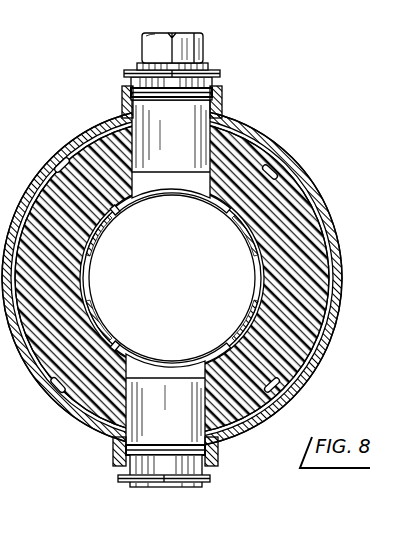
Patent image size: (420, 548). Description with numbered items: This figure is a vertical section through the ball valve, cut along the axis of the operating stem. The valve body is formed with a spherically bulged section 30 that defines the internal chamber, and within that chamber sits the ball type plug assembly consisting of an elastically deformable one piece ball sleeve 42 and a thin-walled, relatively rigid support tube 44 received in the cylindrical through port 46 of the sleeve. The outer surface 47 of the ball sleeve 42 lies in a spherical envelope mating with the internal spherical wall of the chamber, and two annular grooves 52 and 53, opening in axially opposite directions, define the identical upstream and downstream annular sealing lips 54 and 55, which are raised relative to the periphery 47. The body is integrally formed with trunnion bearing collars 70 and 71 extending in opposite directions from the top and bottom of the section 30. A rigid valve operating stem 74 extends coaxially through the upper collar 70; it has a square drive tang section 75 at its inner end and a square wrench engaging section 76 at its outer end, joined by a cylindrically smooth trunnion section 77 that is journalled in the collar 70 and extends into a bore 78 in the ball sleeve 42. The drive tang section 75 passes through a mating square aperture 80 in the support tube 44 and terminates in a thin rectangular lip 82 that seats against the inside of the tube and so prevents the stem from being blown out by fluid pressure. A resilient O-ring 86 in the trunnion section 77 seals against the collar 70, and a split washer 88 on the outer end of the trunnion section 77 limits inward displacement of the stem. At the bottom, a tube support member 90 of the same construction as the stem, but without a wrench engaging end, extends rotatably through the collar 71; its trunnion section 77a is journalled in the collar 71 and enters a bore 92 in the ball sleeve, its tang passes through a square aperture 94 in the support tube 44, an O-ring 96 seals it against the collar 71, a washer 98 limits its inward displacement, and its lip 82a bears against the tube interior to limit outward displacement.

The spherically bulged section 30 is at (314, 182).
The ball sleeve 42 is at (302, 268).
The support tube 44 is at (250, 242).
The through port 46 is at (252, 314).
The surface of ball sleeve 47 is at (323, 200).
The annular groove 52 is at (54, 166).
The annular groove 53 is at (282, 172).
The annular sealing lip 54 is at (72, 150).
The annular sealing lip 55 is at (275, 165).
The trunnion bearing collar 70 is at (214, 93).
The trunnion bearing collar 71 is at (216, 462).
The valve operating stem 74 is at (200, 38).
The drive tang section 75 is at (166, 188).
The wrench engaging section 76 is at (146, 36).
The trunnion section 77 is at (222, 112).
The trunnion section 77a is at (114, 448).
The bore 78 is at (126, 108).
The square aperture 80 is at (118, 208).
The lip 82 is at (196, 203).
The lip 82a is at (181, 356).
The O-ring 86 is at (123, 90).
The split washer 88 is at (219, 74).
The tube support member 90 is at (200, 490).
The bore 92 is at (204, 404).
The square aperture 94 is at (136, 352).
The O-ring 96 is at (208, 450).
The washer 98 is at (118, 479).